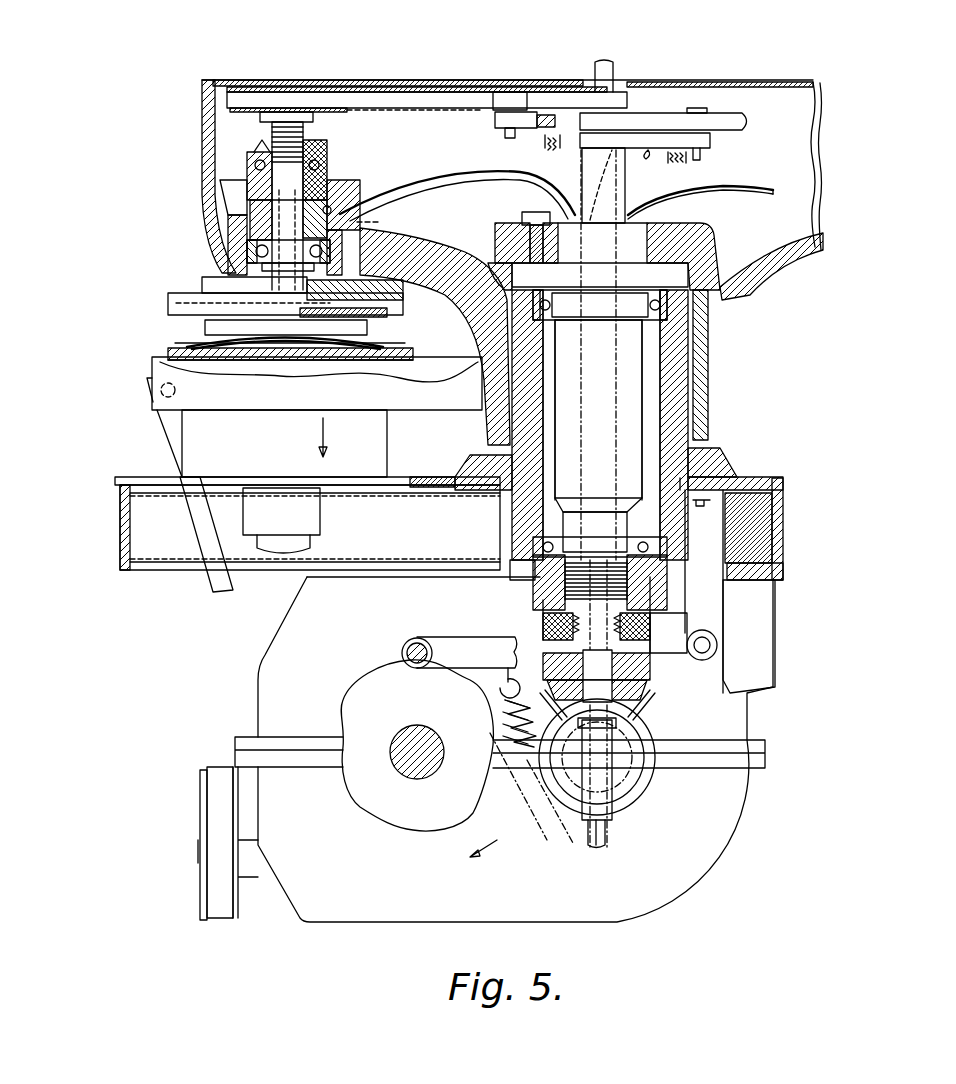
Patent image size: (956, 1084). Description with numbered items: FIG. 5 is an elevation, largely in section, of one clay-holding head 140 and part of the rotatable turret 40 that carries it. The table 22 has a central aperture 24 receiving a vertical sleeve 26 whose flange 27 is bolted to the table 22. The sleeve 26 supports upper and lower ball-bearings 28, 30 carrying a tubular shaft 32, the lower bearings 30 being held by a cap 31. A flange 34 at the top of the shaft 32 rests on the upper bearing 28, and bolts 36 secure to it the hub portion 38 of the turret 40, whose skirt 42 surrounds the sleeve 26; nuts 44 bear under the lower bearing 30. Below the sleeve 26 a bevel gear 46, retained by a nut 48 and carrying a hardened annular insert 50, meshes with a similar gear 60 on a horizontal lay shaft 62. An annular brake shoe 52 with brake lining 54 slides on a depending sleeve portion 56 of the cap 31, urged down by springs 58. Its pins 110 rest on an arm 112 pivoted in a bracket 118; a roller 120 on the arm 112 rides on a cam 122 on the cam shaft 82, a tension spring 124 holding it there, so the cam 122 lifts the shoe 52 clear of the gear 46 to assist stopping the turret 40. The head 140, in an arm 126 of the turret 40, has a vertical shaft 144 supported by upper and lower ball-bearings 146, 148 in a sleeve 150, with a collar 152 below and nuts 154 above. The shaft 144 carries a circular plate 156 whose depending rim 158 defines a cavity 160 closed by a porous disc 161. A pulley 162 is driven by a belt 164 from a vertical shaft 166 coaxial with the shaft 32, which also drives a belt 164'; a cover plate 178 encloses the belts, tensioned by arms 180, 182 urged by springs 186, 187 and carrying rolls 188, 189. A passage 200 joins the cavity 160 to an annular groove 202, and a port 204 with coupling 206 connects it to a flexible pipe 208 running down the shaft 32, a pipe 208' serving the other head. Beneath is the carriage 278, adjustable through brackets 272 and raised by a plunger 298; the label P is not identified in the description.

The table 22 is at (774, 480).
The central aperture 24 is at (703, 455).
The sleeve 26 is at (683, 390).
The flange 27 is at (492, 458).
The upper ball-bearing 28 is at (668, 305).
The lower ball-bearing 30 is at (650, 545).
The cap 31 is at (543, 608).
The shaft 32 is at (645, 338).
The flange 34 is at (685, 275).
The bolts 36 is at (556, 218).
The hub portion 38 is at (522, 215).
The turret 40 is at (778, 258).
The skirt 42 is at (703, 412).
The nuts 44 is at (660, 572).
The bevel gear 46 is at (640, 700).
The nut 48 is at (612, 752).
The hardened annular insert 50 is at (635, 678).
The brake shoe 52 is at (652, 620).
The brake lining 54 is at (520, 655).
The depending sleeve portion 56 is at (545, 625).
The springs 58 is at (535, 612).
The gear 60 is at (625, 792).
The lay shaft 62 is at (618, 780).
The cam shaft 82 is at (420, 770).
The pins 110 is at (512, 560).
The arm 112 is at (703, 651).
The bracket 118 is at (708, 587).
The roller 120 is at (416, 640).
The cam 122 is at (368, 797).
The tension spring 124 is at (503, 706).
The arm 126 is at (203, 146).
The head 140 is at (190, 293).
The vertical shaft 144 is at (247, 215).
The upper ball-bearing 146 is at (250, 156).
The lower ball-bearing 148 is at (255, 245).
The sleeve 150 is at (250, 195).
The collar 152 is at (433, 254).
The nuts 154 is at (262, 158).
The circular plate 156 is at (220, 284).
The depending peripheral rim 158 is at (178, 303).
The cavity 160 is at (400, 301).
The porous disc 161 is at (395, 333).
The pulley 162 is at (346, 92).
The belt 164 is at (413, 72).
The belt 164' is at (663, 68).
The vertical shaft 166 is at (605, 68).
The cover plate 178 is at (712, 84).
The arm 180 is at (542, 120).
The arm 182 is at (652, 141).
The spring 186 is at (527, 140).
The spring 187 is at (688, 160).
The roll 188 is at (510, 92).
The roll 189 is at (705, 118).
The passage 200 is at (393, 216).
The annular groove 202 is at (333, 187).
The port 204 is at (333, 197).
The coupling 206 is at (322, 200).
The flexible pipe 208 is at (457, 199).
The pipe 208' is at (719, 183).
The brackets 272 is at (285, 457).
The carriage 278 is at (138, 373).
The plunger 298 is at (275, 548).
The workpiece P is at (210, 324).